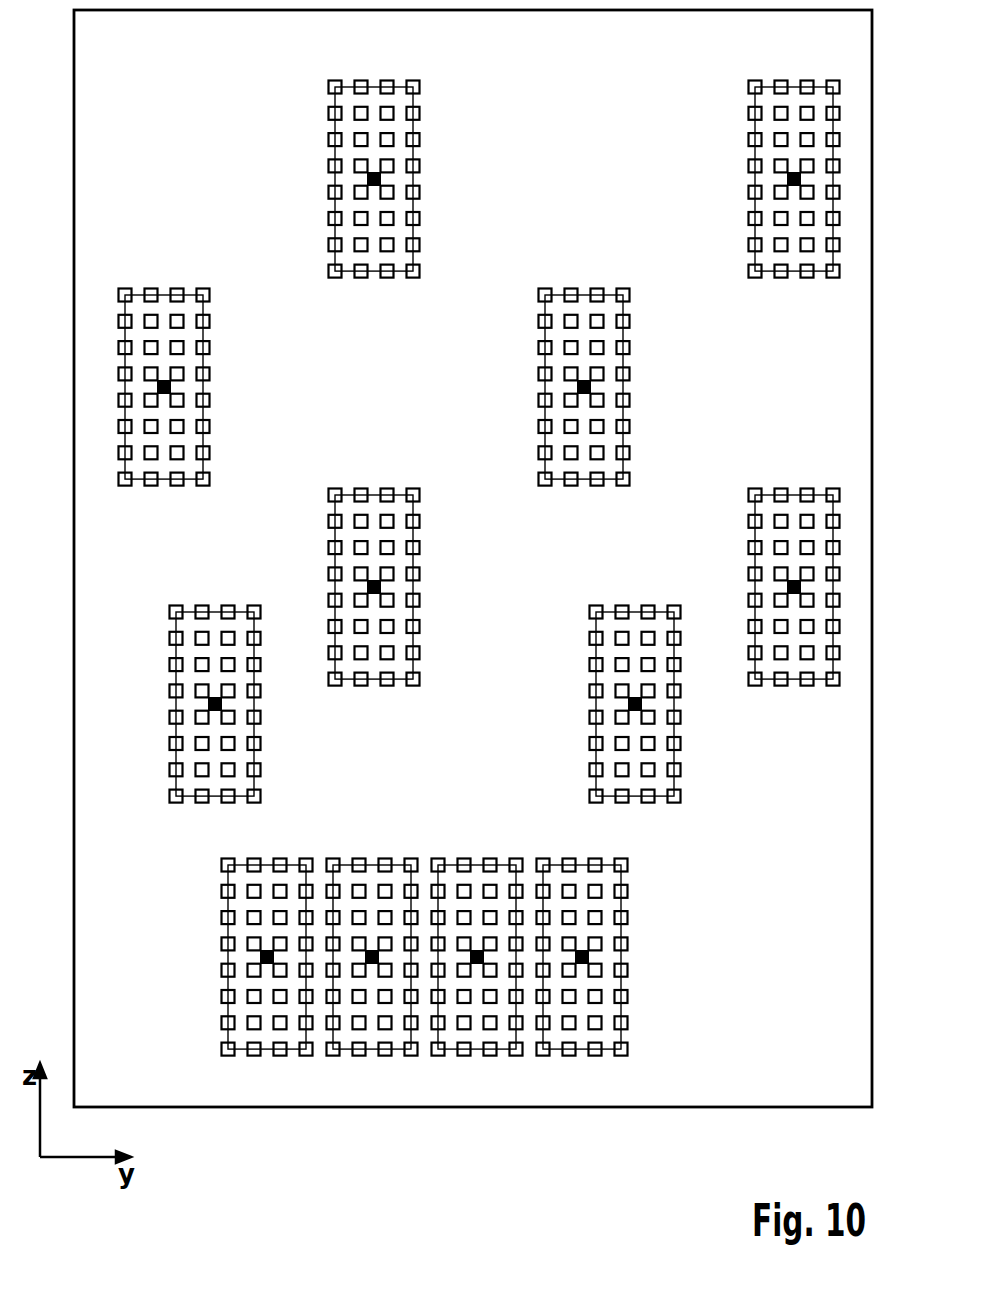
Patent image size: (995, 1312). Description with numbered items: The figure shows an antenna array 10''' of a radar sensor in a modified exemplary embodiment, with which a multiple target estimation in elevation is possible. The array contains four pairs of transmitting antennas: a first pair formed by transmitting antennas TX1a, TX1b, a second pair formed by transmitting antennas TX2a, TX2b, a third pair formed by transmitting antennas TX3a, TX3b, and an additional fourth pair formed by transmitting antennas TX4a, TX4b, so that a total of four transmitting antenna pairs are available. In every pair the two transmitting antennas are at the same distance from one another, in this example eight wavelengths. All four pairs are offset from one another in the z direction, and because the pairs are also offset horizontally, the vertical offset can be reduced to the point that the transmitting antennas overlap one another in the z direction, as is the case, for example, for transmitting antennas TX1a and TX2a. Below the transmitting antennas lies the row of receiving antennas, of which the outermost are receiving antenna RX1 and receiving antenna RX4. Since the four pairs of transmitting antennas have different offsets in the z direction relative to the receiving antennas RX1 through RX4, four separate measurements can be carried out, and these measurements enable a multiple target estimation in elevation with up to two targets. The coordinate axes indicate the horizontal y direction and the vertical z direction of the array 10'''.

The antenna array 10''' is at (473, 587).
The transmitting antenna TX4a is at (330, 125).
The transmitting antenna TX4b is at (750, 155).
The transmitting antenna TX3a is at (205, 340).
The transmitting antenna TX3b is at (544, 385).
The transmitting antenna TX2a is at (415, 590).
The transmitting antenna TX2b is at (751, 560).
The transmitting antenna TX1a is at (256, 727).
The transmitting antenna TX1b is at (676, 727).
The receiving antenna RX1 is at (224, 928).
The receiving antenna RX4 is at (628, 927).